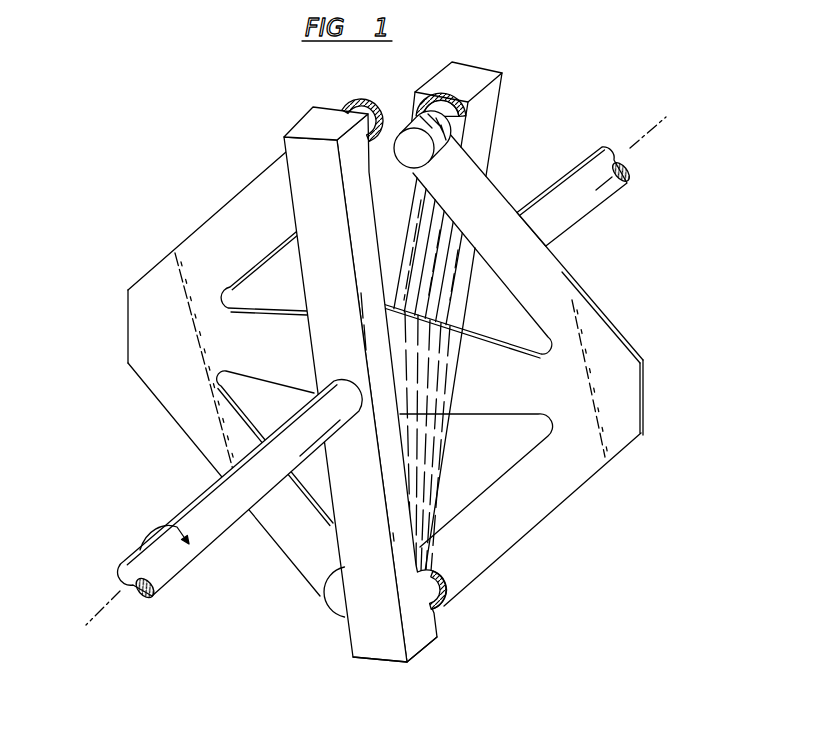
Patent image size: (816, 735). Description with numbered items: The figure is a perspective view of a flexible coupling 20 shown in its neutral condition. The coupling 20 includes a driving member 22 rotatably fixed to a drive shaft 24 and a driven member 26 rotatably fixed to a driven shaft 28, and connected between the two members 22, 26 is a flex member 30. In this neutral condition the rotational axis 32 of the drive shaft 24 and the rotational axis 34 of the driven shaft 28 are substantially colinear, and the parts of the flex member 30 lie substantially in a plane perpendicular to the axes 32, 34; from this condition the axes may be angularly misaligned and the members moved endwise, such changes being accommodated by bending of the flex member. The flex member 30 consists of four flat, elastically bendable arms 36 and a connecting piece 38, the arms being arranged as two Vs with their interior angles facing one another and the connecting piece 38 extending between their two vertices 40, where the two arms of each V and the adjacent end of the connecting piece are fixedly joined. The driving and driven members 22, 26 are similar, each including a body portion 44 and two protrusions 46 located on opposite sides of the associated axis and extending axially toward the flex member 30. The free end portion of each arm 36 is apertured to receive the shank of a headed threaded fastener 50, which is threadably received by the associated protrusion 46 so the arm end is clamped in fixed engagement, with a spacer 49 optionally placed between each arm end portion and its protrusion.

The flexible coupling 20 is at (388, 355).
The driving member 22 is at (352, 643).
The drive shaft 24 is at (176, 524).
The driven member 26 is at (492, 128).
The driven shaft 28 is at (553, 193).
The flex member 30 is at (588, 470).
The rotational axis of the driving shaft 32 is at (118, 595).
The rotational axis of the driven shaft 34 is at (632, 152).
The arm 36 is at (250, 198).
The connecting piece 38 is at (484, 353).
The vertex 40 is at (138, 321).
The body portion 44 is at (305, 256).
The protrusion 46 is at (300, 128).
The spacer 49 is at (346, 108).
The headed threaded fastener 50 is at (405, 135).